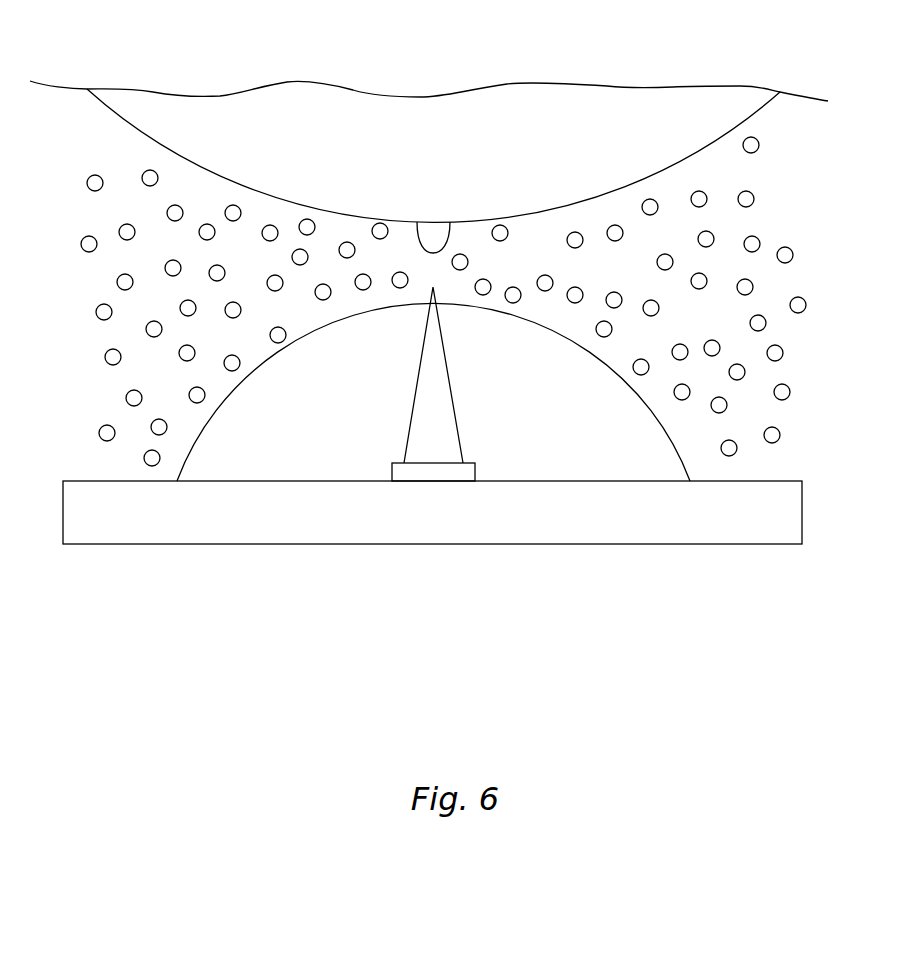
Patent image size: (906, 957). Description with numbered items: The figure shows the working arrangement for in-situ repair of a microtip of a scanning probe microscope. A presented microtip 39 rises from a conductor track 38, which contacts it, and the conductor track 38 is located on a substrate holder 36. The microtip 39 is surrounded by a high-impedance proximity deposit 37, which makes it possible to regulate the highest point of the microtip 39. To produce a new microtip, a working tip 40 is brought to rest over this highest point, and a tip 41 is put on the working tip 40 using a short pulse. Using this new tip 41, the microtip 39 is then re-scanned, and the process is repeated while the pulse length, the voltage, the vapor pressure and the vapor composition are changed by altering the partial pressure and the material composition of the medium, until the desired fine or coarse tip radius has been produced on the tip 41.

The substrate holder 36 is at (245, 510).
The high-impedance proximity deposit 37 is at (335, 450).
The conductor track 38 is at (433, 477).
The microtip 39 is at (452, 425).
The working tip 40 is at (582, 160).
The tip 41 is at (437, 232).